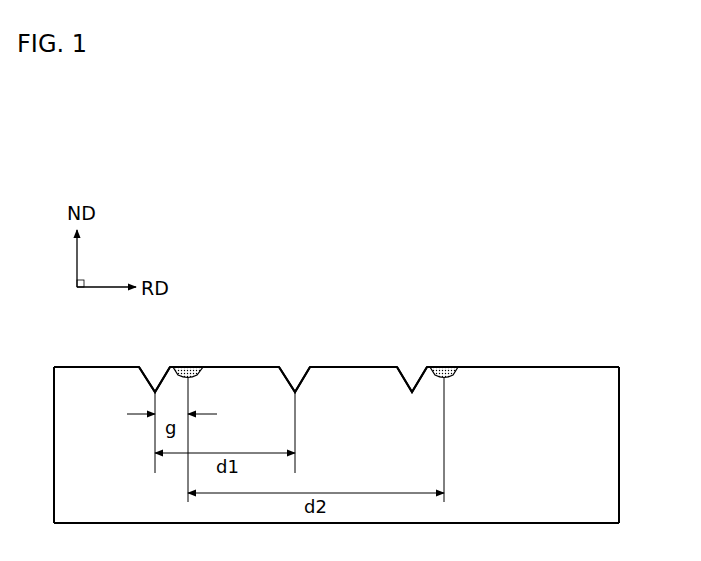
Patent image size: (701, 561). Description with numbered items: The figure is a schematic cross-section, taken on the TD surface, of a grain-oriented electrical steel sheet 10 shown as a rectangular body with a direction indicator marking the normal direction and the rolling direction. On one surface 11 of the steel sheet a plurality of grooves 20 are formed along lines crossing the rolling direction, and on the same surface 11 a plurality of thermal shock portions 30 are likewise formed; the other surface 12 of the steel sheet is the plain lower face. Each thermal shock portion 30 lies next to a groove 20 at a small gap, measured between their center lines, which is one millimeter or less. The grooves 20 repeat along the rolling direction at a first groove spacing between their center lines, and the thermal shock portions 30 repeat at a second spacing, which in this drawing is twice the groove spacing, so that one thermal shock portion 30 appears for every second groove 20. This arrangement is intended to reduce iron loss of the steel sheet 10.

The grain-oriented electrical steel sheet 10 is at (366, 416).
The one surface of the electrical steel sheet 11 is at (603, 366).
The other surface of the steel sheet 12 is at (518, 522).
The groove 20 is at (412, 377).
The thermal shock portion 30 is at (447, 368).